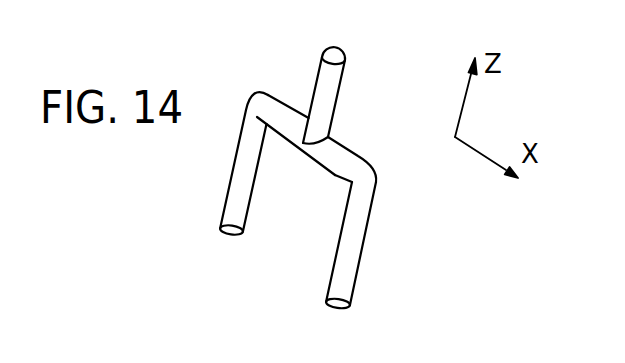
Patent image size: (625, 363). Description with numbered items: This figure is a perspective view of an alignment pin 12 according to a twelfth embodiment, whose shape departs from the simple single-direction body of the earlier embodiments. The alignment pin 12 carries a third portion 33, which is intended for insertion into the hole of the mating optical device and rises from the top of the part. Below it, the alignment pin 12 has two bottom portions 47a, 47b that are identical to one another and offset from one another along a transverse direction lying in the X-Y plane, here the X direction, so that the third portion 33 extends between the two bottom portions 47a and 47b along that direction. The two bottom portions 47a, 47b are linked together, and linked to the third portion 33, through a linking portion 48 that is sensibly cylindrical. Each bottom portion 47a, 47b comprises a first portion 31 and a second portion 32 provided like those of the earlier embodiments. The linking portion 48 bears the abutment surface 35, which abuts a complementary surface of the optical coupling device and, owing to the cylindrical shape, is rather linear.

The alignment pin 12 is at (212, 64).
The first portion 31 is at (243, 216).
The second portion 32 is at (250, 155).
The third portion 33 is at (333, 86).
The abutment surface 35 is at (335, 175).
The bottom portion 47a is at (218, 181).
The bottom portion 47b is at (370, 258).
The linking portion 48 is at (282, 114).